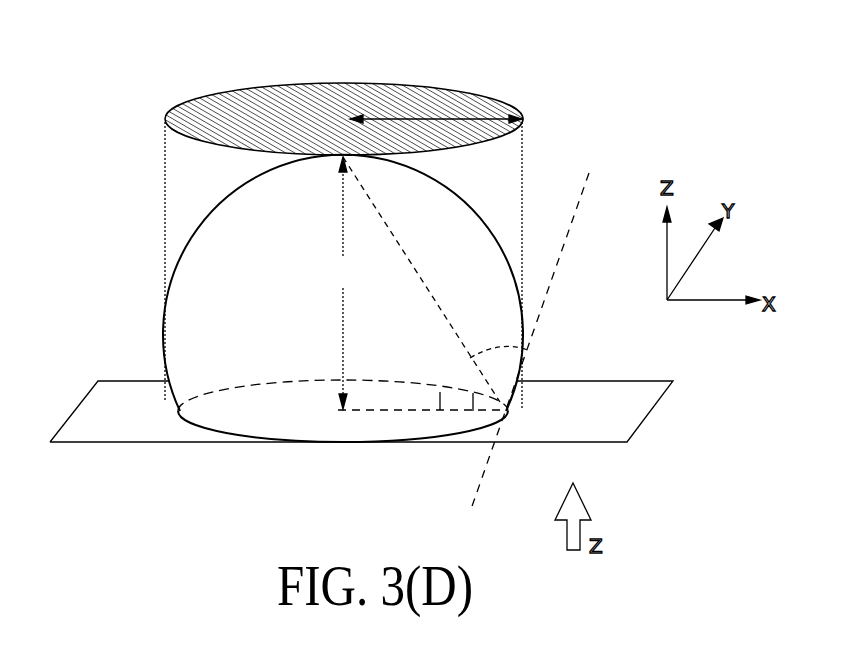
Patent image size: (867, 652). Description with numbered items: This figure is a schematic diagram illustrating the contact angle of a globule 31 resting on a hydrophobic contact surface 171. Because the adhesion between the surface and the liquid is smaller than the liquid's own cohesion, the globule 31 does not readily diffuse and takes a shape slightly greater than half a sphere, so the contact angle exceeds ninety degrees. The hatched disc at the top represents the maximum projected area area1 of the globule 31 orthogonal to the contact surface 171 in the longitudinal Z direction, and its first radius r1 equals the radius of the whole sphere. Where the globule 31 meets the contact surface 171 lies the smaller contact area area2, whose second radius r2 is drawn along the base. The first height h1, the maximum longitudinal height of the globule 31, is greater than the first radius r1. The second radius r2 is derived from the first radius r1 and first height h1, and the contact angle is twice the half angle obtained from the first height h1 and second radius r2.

The contact surface 171 is at (606, 393).
The globule 31 is at (190, 233).
The maximum projected area area1 is at (178, 110).
The contact area area2 is at (206, 411).
The first radius r1 is at (447, 119).
The second radius r2 is at (391, 444).
The first height h1 is at (342, 283).